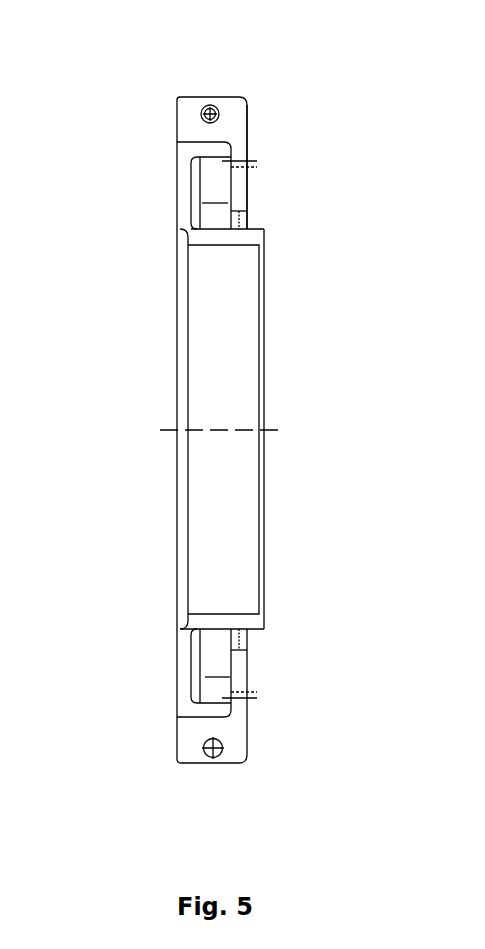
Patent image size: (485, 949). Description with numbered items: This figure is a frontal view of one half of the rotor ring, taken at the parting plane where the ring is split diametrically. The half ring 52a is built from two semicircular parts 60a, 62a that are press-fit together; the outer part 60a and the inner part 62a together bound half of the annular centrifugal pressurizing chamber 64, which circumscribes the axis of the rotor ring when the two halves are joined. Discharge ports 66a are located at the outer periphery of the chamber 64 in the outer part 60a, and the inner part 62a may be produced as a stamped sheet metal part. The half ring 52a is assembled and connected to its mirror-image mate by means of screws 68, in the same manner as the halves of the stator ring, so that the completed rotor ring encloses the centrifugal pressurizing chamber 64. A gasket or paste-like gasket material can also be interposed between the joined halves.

The half ring 52a is at (284, 377).
The semicircular part 60a is at (187, 112).
The inner part 62a is at (200, 499).
The discharge ports 66a is at (187, 205).
The annular centrifugal pressurizing chamber 64 is at (228, 430).
The screws 68 is at (212, 103).